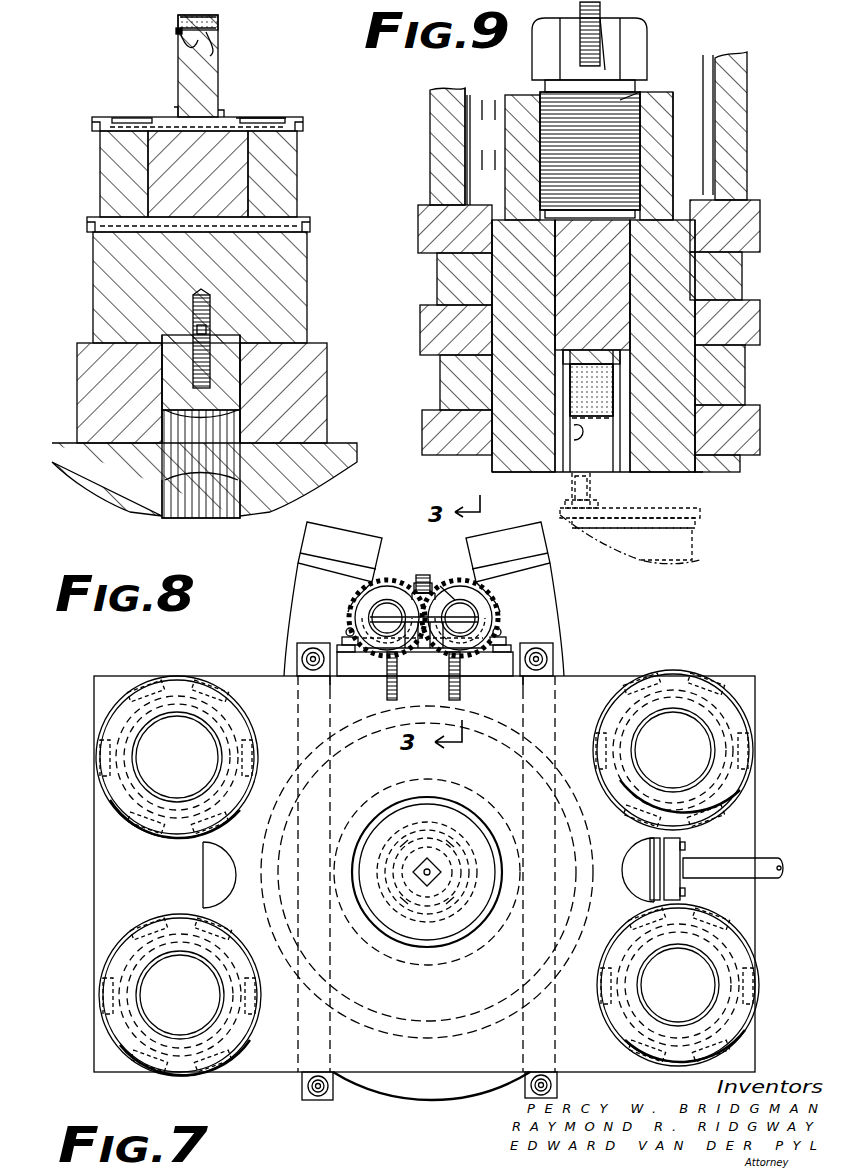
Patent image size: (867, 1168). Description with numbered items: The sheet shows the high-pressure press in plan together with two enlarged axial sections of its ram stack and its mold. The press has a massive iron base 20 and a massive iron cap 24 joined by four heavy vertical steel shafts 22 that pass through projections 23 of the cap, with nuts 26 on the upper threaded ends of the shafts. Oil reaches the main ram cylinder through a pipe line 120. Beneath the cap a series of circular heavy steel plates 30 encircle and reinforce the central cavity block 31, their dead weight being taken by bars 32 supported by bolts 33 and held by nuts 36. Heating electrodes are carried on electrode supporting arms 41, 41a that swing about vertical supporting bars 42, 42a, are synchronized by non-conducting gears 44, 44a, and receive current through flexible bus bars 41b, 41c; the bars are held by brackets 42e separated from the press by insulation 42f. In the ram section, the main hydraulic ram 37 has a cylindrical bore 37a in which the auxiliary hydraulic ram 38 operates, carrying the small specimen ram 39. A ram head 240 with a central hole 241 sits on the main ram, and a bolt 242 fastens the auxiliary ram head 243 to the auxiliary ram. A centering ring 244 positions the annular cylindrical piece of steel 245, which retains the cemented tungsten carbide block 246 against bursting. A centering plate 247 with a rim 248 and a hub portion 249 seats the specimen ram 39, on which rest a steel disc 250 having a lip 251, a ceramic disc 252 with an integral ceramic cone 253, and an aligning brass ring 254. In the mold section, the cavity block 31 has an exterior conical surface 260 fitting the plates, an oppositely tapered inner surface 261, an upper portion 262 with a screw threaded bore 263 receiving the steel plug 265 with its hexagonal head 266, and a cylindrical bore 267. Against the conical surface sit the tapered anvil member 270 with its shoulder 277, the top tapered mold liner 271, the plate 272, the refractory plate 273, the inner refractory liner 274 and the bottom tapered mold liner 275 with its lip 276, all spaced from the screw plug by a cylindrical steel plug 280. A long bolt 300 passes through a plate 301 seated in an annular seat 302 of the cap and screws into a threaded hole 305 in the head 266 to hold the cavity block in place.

In FIG. 7, the iron base 20 is at (110, 885).
In FIG. 7, the vertical steel shafts 22 is at (155, 760).
In FIG. 7, the projections of cap 23 is at (112, 705).
In FIG. 7, the iron cap 24 is at (236, 860).
In FIG. 9, the iron cap 24 is at (445, 155).
In FIG. 7, the nuts 26 is at (120, 795).
In FIG. 7, the circular heavy steel plates 30 is at (218, 890).
In FIG. 9, the circular heavy steel plates 30 is at (460, 270).
In FIG. 9, the cavity block 31 is at (484, 148).
In FIG. 7, the bars 32 is at (295, 730).
In FIG. 7, the bolts 33 is at (315, 676).
In FIG. 7, the nuts 36 is at (298, 649).
In FIG. 8, the main hydraulic ram 37 is at (92, 475).
In FIG. 8, the cylindrical bore 37a is at (192, 510).
In FIG. 8, the auxiliary hydraulic ram 38 is at (214, 500).
In FIG. 8, the specimen ram 39 is at (195, 78).
In FIG. 9, the specimen ram 39 is at (600, 478).
In FIG. 7, the electrode supporting arm 41 is at (315, 594).
In FIG. 7, the electrode supporting arm 41a is at (530, 594).
In FIG. 7, the flexible bus bar 41b is at (312, 545).
In FIG. 7, the flexible bus bar 41c is at (536, 545).
In FIG. 7, the vertical supporting bar 42 is at (390, 610).
In FIG. 7, the vertical supporting bar 42a is at (455, 610).
In FIG. 7, the brackets 42e is at (420, 575).
In FIG. 7, the insulation 42f is at (422, 667).
In FIG. 7, the gear 44 is at (335, 622).
In FIG. 7, the gear 44a is at (510, 622).
In FIG. 7, the pipe line 120 is at (735, 885).
In FIG. 8, the ram head 240 is at (90, 400).
In FIG. 8, the central hole 241 is at (150, 376).
In FIG. 8, the bolt 242 is at (196, 345).
In FIG. 8, the auxiliary ram head 243 is at (120, 275).
In FIG. 8, the centering ring 244 is at (88, 226).
In FIG. 8, the annular cylindrical piece of steel 245 is at (118, 156).
In FIG. 9, the annular cylindrical piece of steel 245 is at (692, 545).
In FIG. 8, the block 246 is at (170, 180).
In FIG. 9, the block 246 is at (695, 565).
In FIG. 8, the centering plate 247 is at (268, 106).
In FIG. 9, the centering plate 247 is at (700, 512).
In FIG. 8, the rim 248 is at (94, 126).
In FIG. 9, the rim 248 is at (695, 524).
In FIG. 8, the hub portion 249 is at (226, 110).
In FIG. 9, the hub portion 249 is at (600, 498).
In FIG. 8, the steel disc 250 is at (186, 48).
In FIG. 8, the lip 251 is at (212, 22).
In FIG. 8, the ceramic disc 252 is at (214, 54).
In FIG. 8, the ceramic cone 253 is at (190, 20).
In FIG. 8, the brass ring 254 is at (178, 33).
In FIG. 9, the brass ring 254 is at (572, 478).
In FIG. 9, the exterior conical surface 260 is at (690, 308).
In FIG. 9, the inner surface 261 is at (700, 328).
In FIG. 9, the upper portion 262 is at (655, 180).
In FIG. 9, the screw threaded bore 263 is at (620, 120).
In FIG. 9, the steel plug 265 is at (620, 110).
In FIG. 7, the hexagonal head 266 is at (415, 900).
In FIG. 9, the hexagonal head 266 is at (540, 62).
In FIG. 9, the cylindrical bore 267 is at (690, 230).
In FIG. 9, the tapered anvil member 270 is at (615, 355).
In FIG. 9, the top tapered mold liner 271 is at (700, 392).
In FIG. 9, the plate 272 is at (612, 380).
In FIG. 9, the refractory plate 273 is at (620, 420).
In FIG. 9, the inner refractory liner 274 is at (700, 430).
In FIG. 9, the bottom tapered mold liner 275 is at (715, 447).
In FIG. 9, the lip 276 is at (530, 450).
In FIG. 9, the shoulder 277 is at (520, 350).
In FIG. 9, the cylindrical steel plug 280 is at (620, 270).
In FIG. 7, the long bolt 300 is at (433, 862).
In FIG. 9, the long bolt 300 is at (600, 14).
In FIG. 7, the plate 301 is at (410, 815).
In FIG. 7, the annular seat 302 is at (440, 895).
In FIG. 9, the threaded hole 305 is at (600, 52).